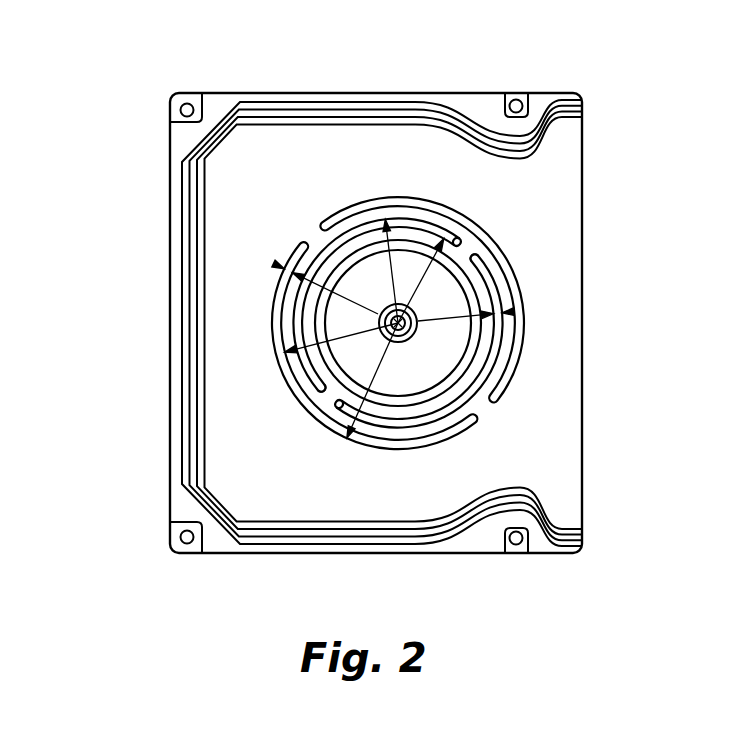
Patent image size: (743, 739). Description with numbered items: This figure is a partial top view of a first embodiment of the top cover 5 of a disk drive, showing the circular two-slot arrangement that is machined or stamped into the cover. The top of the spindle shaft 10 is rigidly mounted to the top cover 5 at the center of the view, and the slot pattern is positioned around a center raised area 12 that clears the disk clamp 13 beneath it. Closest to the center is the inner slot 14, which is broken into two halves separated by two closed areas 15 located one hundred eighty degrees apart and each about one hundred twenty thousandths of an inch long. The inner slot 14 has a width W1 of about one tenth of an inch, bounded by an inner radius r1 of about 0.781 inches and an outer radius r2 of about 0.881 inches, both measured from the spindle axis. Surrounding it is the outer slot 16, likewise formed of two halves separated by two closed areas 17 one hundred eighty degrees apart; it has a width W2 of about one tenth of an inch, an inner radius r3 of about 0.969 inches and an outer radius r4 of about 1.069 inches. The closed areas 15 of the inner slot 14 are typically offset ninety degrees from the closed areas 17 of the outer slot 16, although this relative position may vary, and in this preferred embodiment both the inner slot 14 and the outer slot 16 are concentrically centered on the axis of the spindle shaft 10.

The top cover 5 is at (583, 498).
The shaft 10 is at (400, 330).
The center raised area 12 is at (372, 252).
The disk clamp 13 is at (410, 338).
The inner slot 14 is at (490, 280).
The closed areas 15 is at (323, 404).
The outer slot 16 is at (472, 252).
The closed areas 17 is at (313, 235).
The inner radius of inner slot r1 is at (450, 249).
The outer radius of inner slot r2 is at (394, 278).
The inner radius of outer slot r3 is at (332, 362).
The outer radius of outer slot r4 is at (385, 372).
The width of inner slot W1 is at (512, 312).
The width of outer slot W2 is at (275, 261).